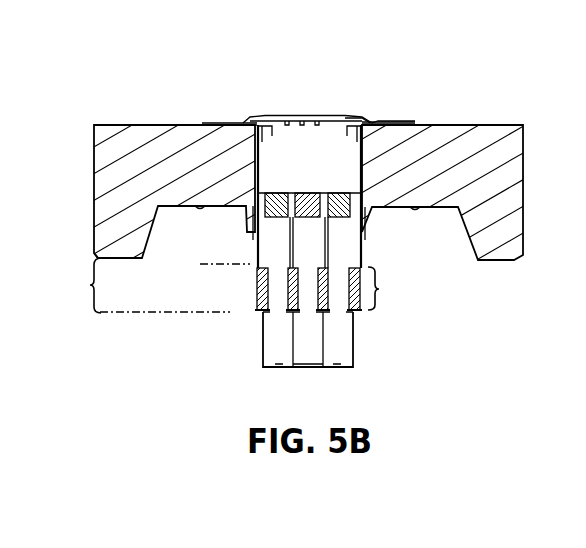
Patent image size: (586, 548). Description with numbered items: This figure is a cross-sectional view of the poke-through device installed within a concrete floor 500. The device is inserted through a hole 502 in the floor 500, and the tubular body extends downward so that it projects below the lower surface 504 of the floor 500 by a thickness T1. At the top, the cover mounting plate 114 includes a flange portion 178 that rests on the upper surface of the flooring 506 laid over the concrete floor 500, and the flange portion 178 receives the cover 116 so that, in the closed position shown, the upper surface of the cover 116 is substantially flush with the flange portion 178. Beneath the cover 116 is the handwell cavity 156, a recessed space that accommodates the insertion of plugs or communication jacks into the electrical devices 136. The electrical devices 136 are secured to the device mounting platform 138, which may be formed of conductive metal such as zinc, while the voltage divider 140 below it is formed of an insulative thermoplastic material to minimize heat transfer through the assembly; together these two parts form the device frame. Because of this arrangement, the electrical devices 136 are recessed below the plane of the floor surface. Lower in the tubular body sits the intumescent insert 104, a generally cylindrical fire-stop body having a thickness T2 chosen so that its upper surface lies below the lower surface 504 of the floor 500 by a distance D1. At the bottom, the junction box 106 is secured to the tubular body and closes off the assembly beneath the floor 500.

The floor 500 is at (437, 137).
The hole 502 is at (372, 123).
The lower surface 504 is at (124, 262).
The flooring 506 is at (218, 123).
The cover 116 is at (294, 117).
The cover mounting plate 114 is at (355, 122).
The flange portion 178 is at (242, 123).
The handwell cavity 156 is at (303, 173).
The device mounting platform 138 is at (323, 190).
The electrical devices 136 is at (283, 219).
The voltage divider 140 is at (338, 248).
The intumescent insert 104 is at (258, 303).
The junction box 106 is at (348, 350).
The distance D1 is at (200, 264).
The thickness T1 is at (145, 285).
The thickness T2 is at (385, 288).